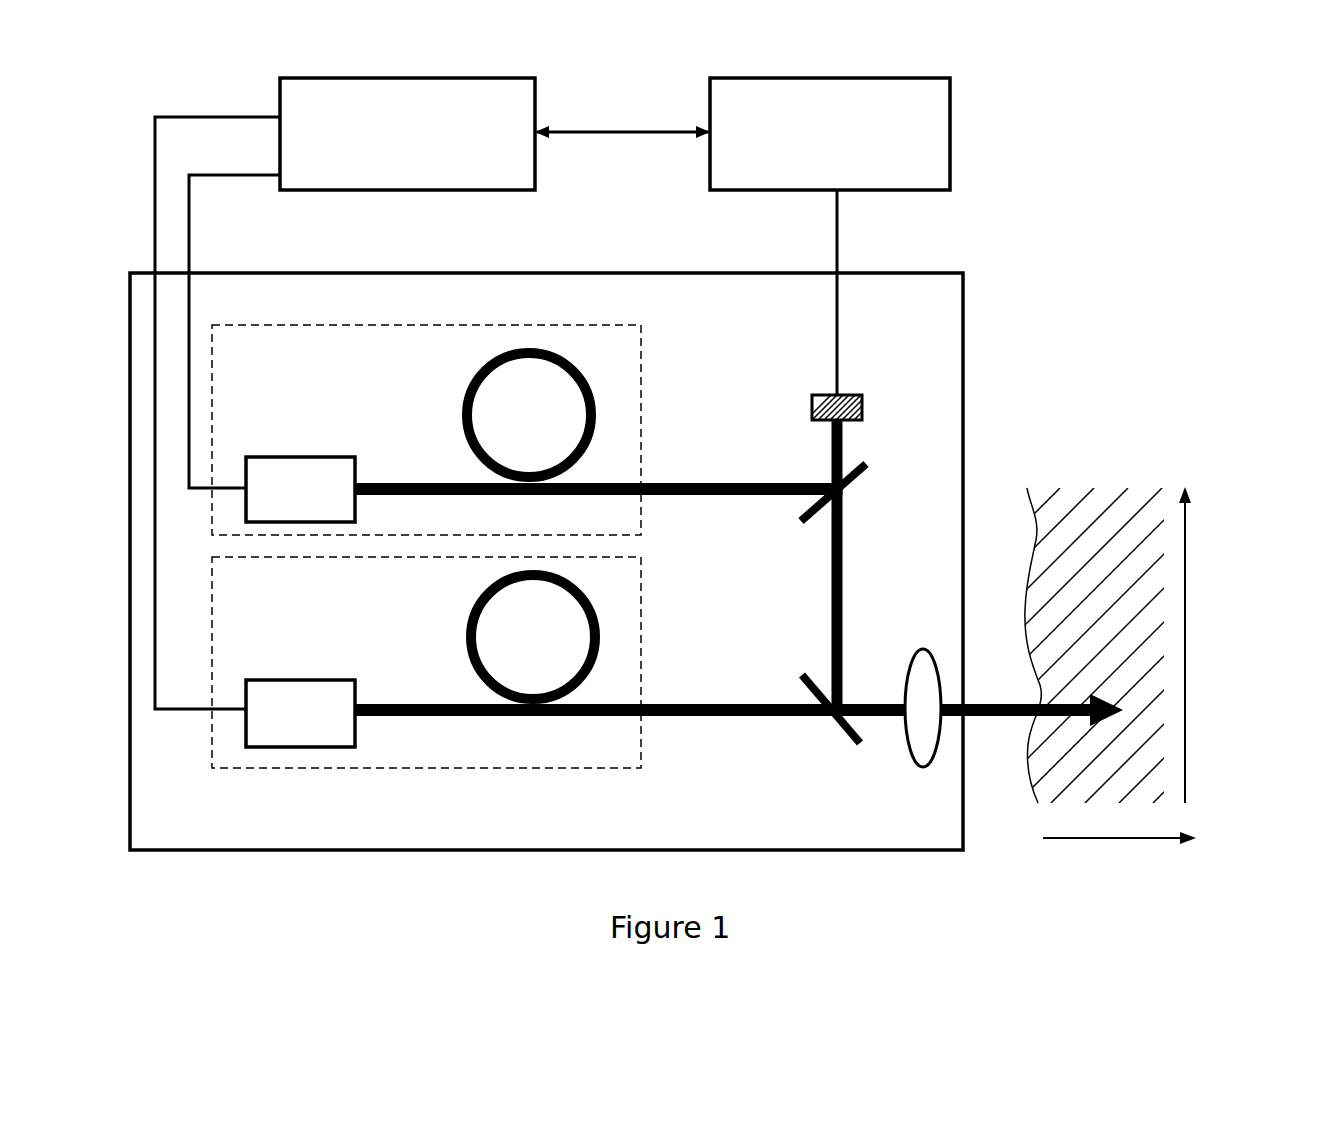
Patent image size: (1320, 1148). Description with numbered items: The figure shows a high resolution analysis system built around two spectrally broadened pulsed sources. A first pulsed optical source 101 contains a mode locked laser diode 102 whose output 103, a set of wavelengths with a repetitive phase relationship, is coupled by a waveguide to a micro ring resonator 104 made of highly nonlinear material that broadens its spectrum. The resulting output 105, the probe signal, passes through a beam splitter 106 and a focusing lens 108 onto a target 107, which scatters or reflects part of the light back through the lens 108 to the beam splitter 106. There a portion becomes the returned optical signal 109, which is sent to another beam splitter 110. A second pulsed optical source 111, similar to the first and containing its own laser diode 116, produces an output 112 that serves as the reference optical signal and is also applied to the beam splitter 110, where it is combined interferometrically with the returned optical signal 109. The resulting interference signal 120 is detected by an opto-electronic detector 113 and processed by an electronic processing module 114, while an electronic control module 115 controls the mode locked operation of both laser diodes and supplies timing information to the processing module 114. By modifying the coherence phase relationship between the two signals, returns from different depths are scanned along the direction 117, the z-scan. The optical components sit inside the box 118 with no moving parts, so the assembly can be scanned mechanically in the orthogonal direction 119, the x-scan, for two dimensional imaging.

The first pulsed optical source 101 is at (642, 663).
The mode locked laser diode 102 is at (305, 678).
The output 103 is at (422, 697).
The micro ring resonator 104 is at (463, 617).
The output 105 is at (743, 717).
The beam splitter 106 is at (838, 735).
The target 107 is at (1105, 478).
The focusing lens 108 is at (918, 772).
The returned optical signal 109 is at (840, 567).
The beam splitter 110 is at (862, 480).
The second pulsed optical source 111 is at (642, 360).
The output 112 is at (750, 496).
The opto-electronic detector 113 is at (862, 398).
The electronic processing module 114 is at (952, 138).
The electronic control module 115 is at (537, 162).
The laser diode 116 is at (305, 453).
The direction 117 is at (1137, 843).
The box 118 is at (252, 853).
The direction 119 is at (1187, 612).
The interference signal 120 is at (822, 455).